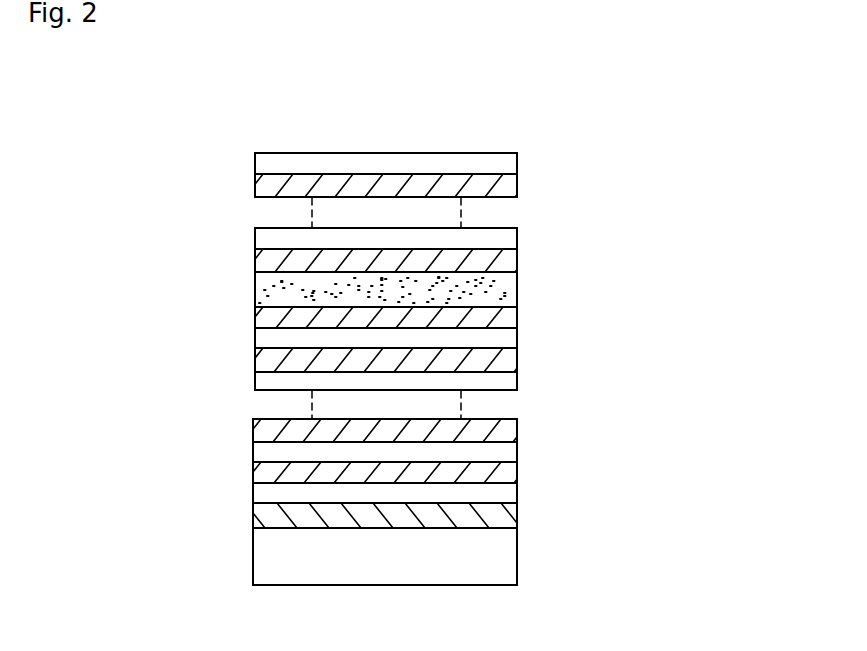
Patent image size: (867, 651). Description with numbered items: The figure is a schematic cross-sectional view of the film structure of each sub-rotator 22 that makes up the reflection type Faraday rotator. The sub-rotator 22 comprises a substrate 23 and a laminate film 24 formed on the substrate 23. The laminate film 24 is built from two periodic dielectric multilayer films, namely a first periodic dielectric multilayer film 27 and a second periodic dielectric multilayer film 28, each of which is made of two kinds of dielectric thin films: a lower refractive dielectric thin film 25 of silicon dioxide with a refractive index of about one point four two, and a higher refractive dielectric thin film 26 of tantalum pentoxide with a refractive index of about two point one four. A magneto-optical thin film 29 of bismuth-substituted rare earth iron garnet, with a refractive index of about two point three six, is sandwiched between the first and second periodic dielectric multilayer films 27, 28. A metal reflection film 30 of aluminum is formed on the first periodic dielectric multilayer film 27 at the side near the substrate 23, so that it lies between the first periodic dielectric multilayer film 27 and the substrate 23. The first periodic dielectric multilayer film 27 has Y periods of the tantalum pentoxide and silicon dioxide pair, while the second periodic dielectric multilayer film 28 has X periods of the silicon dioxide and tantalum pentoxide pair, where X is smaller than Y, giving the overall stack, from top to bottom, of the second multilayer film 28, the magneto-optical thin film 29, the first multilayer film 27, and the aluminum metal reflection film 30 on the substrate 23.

The sub-rotator 22 is at (512, 138).
The substrate 23 is at (263, 553).
The laminate film 24 is at (598, 530).
The lower refractive dielectric thin film 25 is at (326, 330).
The higher refractive dielectric thin film 26 is at (326, 329).
The first periodic dielectric multilayer film 27 is at (526, 308).
The second periodic dielectric multilayer film 28 is at (531, 157).
The magneto-optical thin film 29 is at (318, 290).
The metal reflection film 30 is at (339, 521).